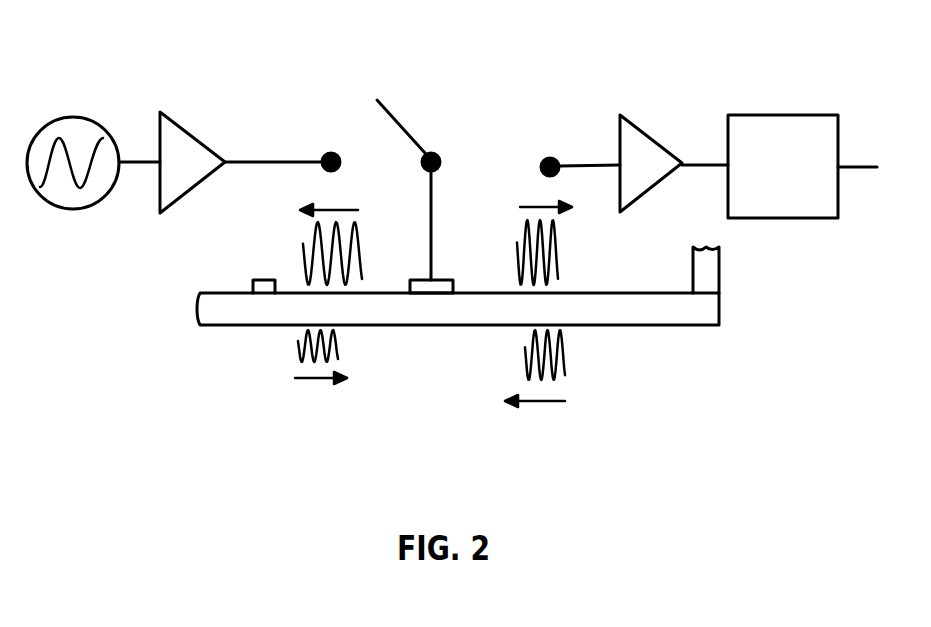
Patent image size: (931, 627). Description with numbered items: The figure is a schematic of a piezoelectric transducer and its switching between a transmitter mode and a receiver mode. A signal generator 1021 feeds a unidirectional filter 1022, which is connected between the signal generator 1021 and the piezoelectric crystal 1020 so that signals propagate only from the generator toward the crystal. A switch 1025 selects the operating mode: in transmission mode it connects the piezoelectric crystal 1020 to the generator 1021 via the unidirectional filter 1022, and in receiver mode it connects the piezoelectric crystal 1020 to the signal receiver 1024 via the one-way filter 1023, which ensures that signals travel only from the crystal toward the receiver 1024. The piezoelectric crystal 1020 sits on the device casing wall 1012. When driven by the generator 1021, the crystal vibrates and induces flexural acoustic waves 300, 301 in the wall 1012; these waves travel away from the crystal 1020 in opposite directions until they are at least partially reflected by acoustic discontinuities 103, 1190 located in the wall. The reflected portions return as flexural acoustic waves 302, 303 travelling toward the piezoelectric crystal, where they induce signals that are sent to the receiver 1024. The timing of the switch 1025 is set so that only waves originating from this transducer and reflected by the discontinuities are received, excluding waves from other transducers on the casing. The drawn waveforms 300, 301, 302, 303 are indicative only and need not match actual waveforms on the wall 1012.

The signal generator 1021 is at (50, 117).
The unidirectional filter 1022 is at (182, 123).
The switch 1025 is at (419, 176).
The piezoelectric crystal 1020 is at (433, 293).
The unidirectional filter 1023 is at (642, 130).
The signal receiver 1024 is at (770, 115).
The wall 1012 is at (668, 317).
The acoustic discontinuity 103 is at (262, 287).
The acoustic discontinuity 1190 is at (712, 290).
The flexural acoustic wave 300 is at (358, 240).
The flexural acoustic wave 301 is at (558, 243).
The reflected flexural acoustic wave 302 is at (297, 353).
The reflected flexural acoustic wave 303 is at (568, 367).